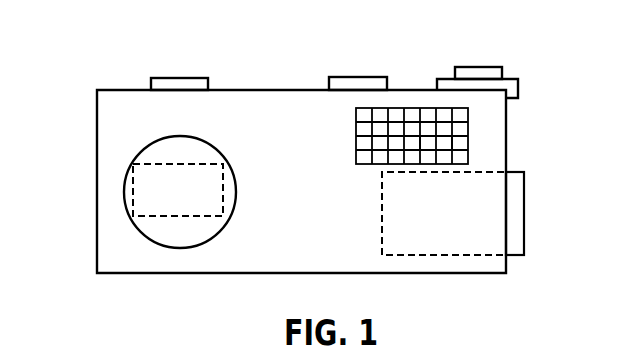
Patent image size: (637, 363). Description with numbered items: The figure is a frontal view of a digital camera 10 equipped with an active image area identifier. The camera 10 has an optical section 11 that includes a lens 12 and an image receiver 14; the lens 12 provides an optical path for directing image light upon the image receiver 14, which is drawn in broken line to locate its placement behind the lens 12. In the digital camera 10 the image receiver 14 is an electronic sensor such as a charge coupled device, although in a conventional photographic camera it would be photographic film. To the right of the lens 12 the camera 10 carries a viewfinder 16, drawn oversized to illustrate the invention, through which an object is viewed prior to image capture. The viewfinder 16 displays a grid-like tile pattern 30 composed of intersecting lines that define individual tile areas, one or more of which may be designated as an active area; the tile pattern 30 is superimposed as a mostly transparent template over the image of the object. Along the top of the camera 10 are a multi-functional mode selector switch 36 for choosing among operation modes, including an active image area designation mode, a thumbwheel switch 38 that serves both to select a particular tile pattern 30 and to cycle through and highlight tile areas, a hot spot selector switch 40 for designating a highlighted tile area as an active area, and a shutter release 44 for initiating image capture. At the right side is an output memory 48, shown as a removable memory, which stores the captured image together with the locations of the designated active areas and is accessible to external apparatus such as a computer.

The camera 10 is at (97, 216).
The optical section 11 is at (108, 124).
The lens 12 is at (124, 197).
The image receiver 14 is at (166, 218).
The viewfinder 16 is at (468, 117).
The tile pattern 30 is at (443, 142).
The mode selector switch 36 is at (329, 81).
The thumbwheel switch 38 is at (518, 90).
The hot spot selector switch 40 is at (459, 67).
The shutter release 44 is at (172, 78).
The output memory 48 is at (512, 210).